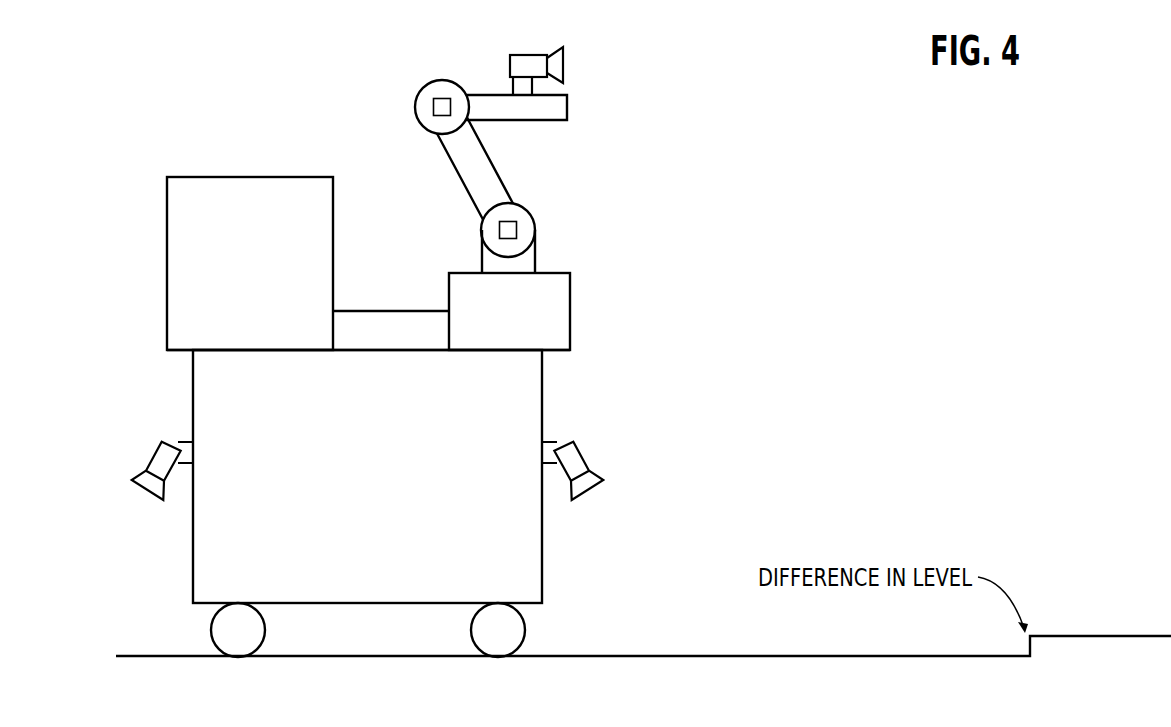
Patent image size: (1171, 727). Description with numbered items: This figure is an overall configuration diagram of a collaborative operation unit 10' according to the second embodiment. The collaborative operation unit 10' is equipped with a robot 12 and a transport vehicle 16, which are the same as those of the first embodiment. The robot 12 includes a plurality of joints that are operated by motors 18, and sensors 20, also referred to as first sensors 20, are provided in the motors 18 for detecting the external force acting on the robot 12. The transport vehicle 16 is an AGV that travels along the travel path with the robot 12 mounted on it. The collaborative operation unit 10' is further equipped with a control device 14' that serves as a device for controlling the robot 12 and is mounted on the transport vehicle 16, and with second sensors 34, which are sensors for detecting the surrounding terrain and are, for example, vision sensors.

The collaborative operation unit 10' is at (369, 350).
The robot 12 is at (532, 157).
The control device 14' is at (250, 236).
The transport vehicle 16 is at (527, 413).
The motor 18 is at (425, 87).
The sensor 20 is at (432, 108).
The second sensor 34 is at (560, 65).